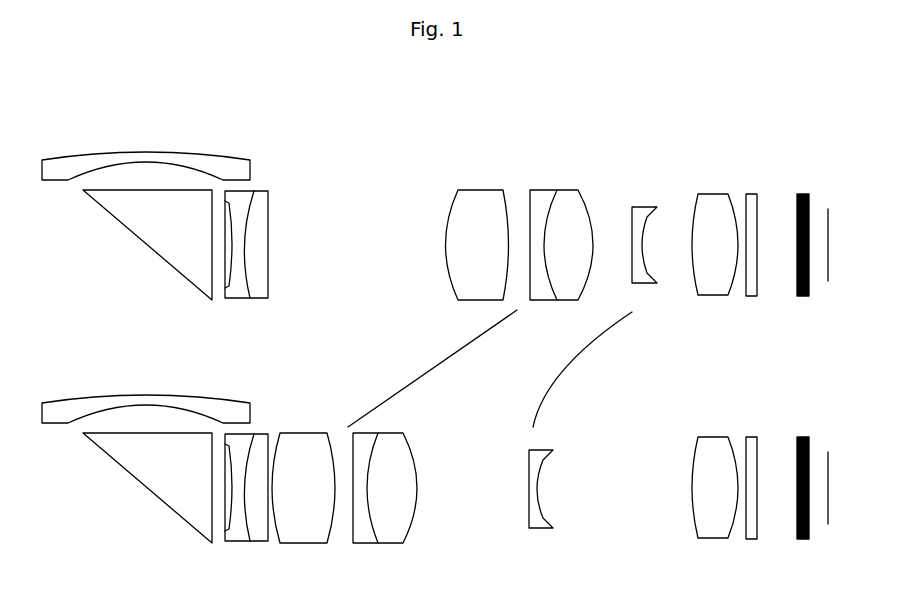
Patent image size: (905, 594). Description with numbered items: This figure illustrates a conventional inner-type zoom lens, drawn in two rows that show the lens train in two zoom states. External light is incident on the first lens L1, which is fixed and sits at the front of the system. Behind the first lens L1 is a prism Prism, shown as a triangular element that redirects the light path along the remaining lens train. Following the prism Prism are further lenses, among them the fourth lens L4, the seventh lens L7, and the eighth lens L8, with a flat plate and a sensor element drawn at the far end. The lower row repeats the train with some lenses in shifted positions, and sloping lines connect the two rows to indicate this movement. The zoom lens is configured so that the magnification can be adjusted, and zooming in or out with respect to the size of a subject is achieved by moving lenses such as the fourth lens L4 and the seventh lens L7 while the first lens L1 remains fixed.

The first lens L1 is at (152, 152).
The prism Prism is at (153, 240).
The fourth lens L4 is at (480, 189).
The seventh lens L7 is at (643, 195).
The eighth lens L8 is at (712, 193).